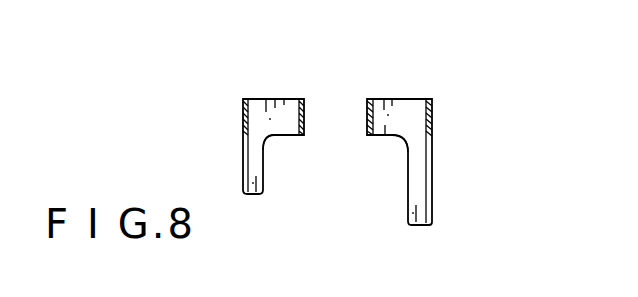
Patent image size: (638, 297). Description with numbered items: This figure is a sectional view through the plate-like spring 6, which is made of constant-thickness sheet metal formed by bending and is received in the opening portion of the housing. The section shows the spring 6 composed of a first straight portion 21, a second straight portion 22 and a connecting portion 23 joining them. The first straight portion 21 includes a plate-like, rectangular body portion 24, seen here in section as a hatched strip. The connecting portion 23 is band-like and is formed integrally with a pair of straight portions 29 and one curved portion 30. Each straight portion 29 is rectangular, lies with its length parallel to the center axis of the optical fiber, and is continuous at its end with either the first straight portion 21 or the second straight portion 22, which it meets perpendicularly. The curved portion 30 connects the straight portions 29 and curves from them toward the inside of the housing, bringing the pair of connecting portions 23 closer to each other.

The plate-like spring 6 is at (437, 95).
The first straight portion 21 is at (242, 127).
The second straight portion 22 is at (432, 113).
The connecting portion 23 is at (266, 98).
The body portion 24 is at (242, 111).
The straight portion 29 is at (285, 137).
The curved portion 30 is at (305, 103).